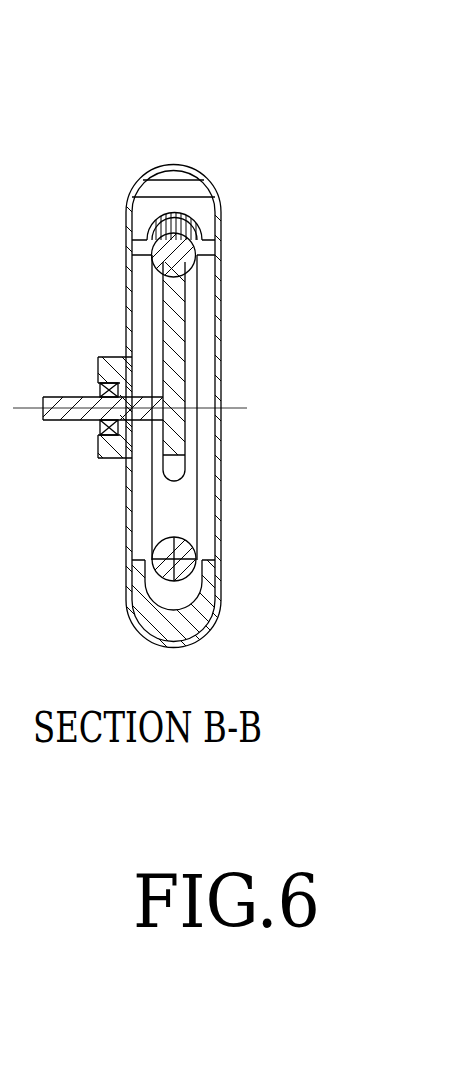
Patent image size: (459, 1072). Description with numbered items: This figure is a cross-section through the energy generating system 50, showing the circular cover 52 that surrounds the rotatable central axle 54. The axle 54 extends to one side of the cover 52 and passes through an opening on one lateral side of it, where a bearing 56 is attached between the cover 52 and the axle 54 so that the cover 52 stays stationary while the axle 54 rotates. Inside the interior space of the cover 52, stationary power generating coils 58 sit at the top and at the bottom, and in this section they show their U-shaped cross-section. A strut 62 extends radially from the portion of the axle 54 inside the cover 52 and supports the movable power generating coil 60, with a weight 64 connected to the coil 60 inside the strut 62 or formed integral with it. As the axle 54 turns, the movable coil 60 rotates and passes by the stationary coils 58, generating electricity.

The energy generating system 50 is at (229, 538).
The circular cover 52 is at (130, 278).
The rotatable central axle 54 is at (86, 420).
The bearing 56 is at (108, 383).
The stationary power generating coil 58 is at (138, 203).
The movable power generating coil 60 is at (200, 222).
The strut 62 is at (185, 335).
The weight 64 is at (186, 250).